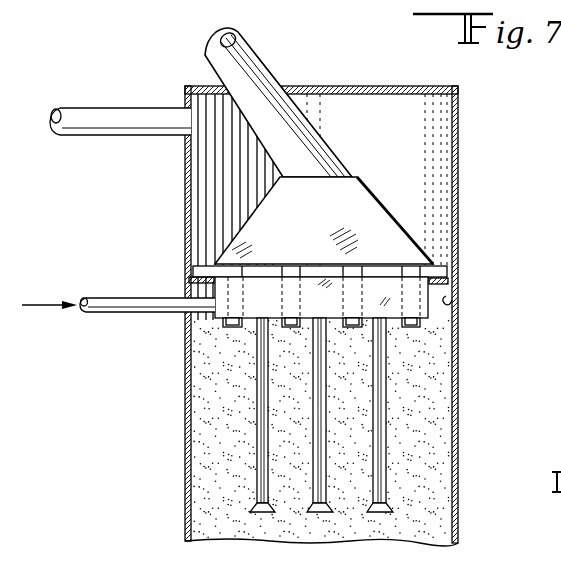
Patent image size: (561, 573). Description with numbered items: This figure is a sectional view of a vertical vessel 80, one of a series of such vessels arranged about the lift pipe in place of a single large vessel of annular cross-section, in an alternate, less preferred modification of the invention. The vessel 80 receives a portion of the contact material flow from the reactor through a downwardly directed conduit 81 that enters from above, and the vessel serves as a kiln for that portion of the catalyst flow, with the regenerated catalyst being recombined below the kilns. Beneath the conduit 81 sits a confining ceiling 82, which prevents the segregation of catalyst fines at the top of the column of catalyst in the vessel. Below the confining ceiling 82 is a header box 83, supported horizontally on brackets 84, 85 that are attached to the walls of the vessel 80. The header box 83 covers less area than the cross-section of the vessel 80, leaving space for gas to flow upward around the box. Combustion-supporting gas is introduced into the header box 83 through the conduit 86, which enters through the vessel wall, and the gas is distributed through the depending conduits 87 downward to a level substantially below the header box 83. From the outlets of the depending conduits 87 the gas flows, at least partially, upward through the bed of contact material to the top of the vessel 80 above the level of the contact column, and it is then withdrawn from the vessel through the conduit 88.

The vessel 80 is at (458, 393).
The downwardly directed conduit 81 is at (262, 63).
The confining ceiling 82 is at (387, 218).
The header box 83 is at (437, 266).
The bracket 84 is at (450, 298).
The bracket 85 is at (188, 280).
The conduit 86 is at (157, 313).
The depending conduits 87 is at (380, 446).
The conduit 88 is at (117, 91).